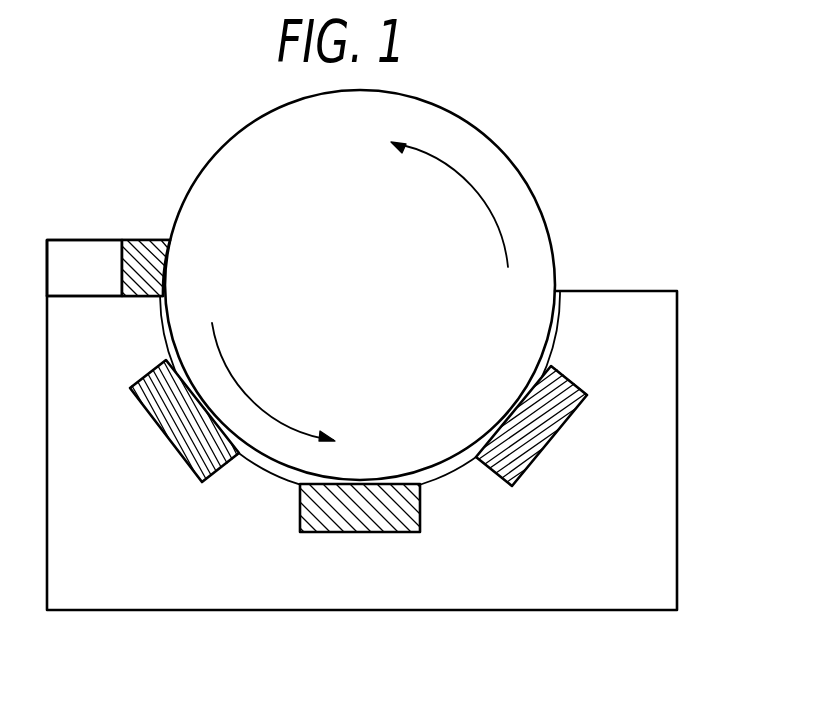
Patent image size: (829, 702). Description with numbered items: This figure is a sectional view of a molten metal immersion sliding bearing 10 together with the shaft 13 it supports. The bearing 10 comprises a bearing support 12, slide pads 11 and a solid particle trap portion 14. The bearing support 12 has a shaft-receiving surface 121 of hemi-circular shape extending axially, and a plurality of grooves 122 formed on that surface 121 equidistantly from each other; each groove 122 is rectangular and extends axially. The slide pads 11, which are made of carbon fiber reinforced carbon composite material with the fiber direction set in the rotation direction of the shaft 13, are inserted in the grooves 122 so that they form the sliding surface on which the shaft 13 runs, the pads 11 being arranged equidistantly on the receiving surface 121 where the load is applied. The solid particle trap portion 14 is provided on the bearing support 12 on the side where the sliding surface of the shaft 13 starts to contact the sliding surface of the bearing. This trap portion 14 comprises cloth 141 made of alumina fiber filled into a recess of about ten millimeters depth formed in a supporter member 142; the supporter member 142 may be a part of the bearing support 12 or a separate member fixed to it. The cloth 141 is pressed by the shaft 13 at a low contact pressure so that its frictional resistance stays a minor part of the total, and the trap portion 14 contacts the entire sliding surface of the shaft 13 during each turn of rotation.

The molten metal immersion sliding bearing 10 is at (702, 244).
The slide pads 11 is at (194, 456).
The bearing support 12 is at (613, 300).
The shaft-receiving surface 121 is at (465, 478).
The grooves 122 is at (574, 372).
The shaft 13 is at (510, 202).
The solid particle trap portion 14 is at (138, 253).
The cloth 141 is at (152, 240).
The supporter member 142 is at (82, 248).